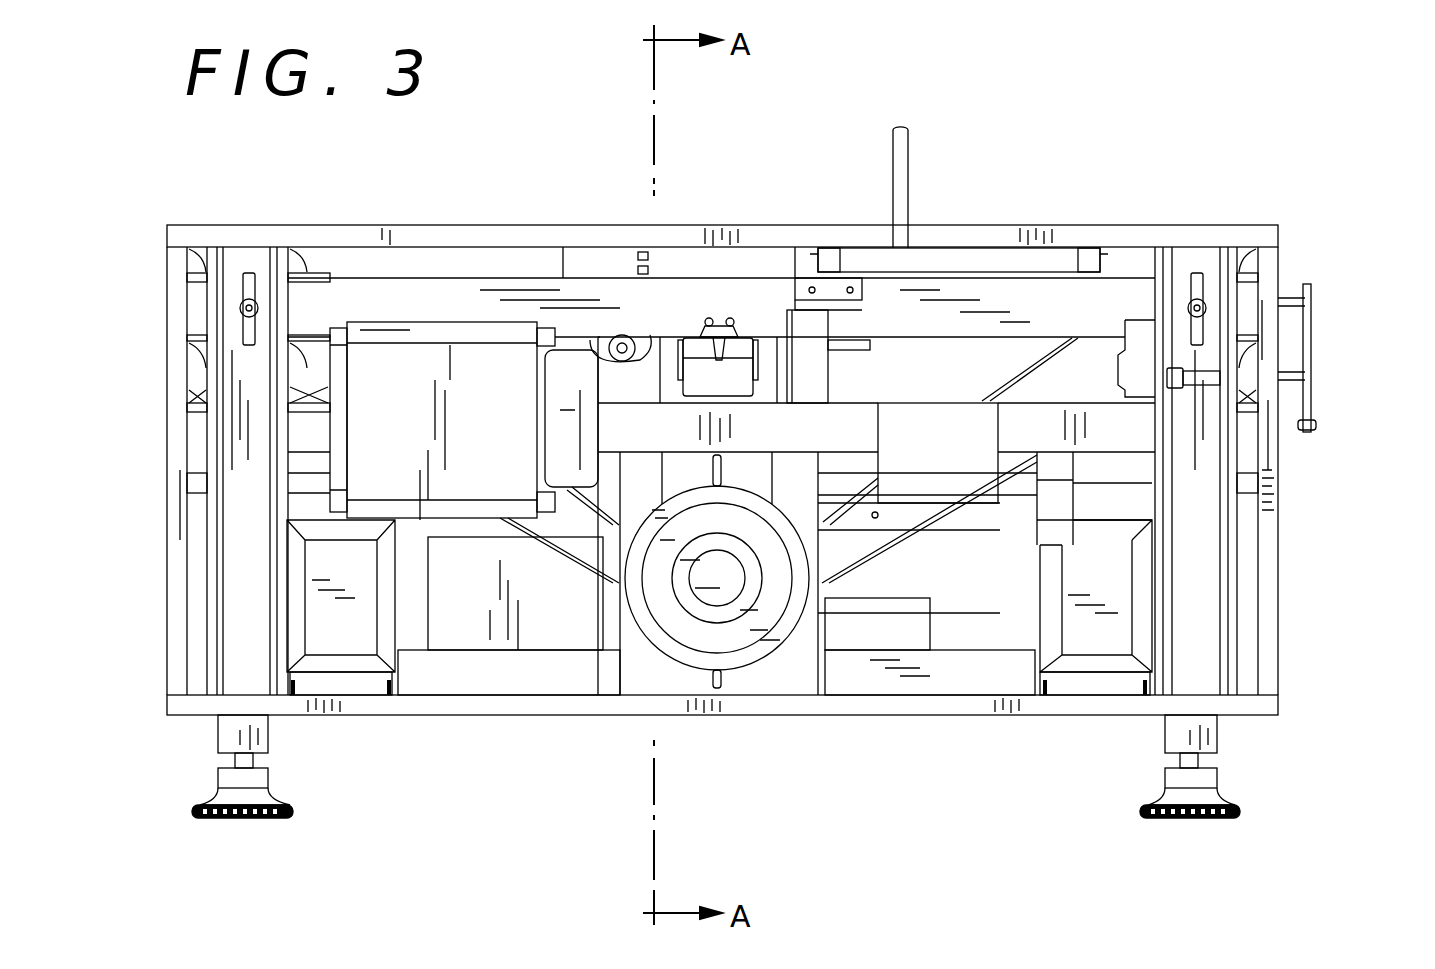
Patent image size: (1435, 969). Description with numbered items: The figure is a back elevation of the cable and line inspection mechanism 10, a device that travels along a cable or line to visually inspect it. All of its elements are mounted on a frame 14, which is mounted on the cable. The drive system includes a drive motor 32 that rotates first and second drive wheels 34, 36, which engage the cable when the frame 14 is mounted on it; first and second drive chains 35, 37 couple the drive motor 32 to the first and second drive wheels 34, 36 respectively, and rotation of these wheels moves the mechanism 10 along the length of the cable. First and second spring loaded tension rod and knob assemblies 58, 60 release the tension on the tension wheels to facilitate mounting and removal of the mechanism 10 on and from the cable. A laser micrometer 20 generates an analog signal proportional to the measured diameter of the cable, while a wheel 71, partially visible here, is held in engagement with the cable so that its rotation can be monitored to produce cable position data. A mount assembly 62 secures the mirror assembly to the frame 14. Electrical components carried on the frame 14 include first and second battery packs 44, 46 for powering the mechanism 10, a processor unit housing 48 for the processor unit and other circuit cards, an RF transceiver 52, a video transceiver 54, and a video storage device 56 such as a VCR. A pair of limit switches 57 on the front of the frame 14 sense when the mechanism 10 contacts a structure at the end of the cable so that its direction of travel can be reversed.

The cable and line inspection mechanism 10 is at (1178, 120).
The frame 14 is at (597, 705).
The laser micrometer 20 is at (830, 325).
The drive motor 32 is at (740, 660).
The first drive wheel 34 is at (205, 265).
The first drive chain 35 is at (500, 535).
The second drive wheel 36 is at (1249, 270).
The second drive chain 37 is at (870, 560).
The first battery pack 44 is at (1090, 638).
The second battery pack 46 is at (340, 640).
The processor unit housing 48 is at (560, 632).
The RF transceiver 52 is at (865, 255).
The video transceiver 54 is at (575, 263).
The video storage device 56 is at (370, 355).
The limit switches 57 is at (1320, 350).
The first spring loaded tension rod and knob assembly 58 is at (260, 818).
The second spring loaded tension rod and knob assembly 60 is at (1200, 820).
The mount assembly 62 is at (688, 338).
The wheel 71 is at (655, 333).